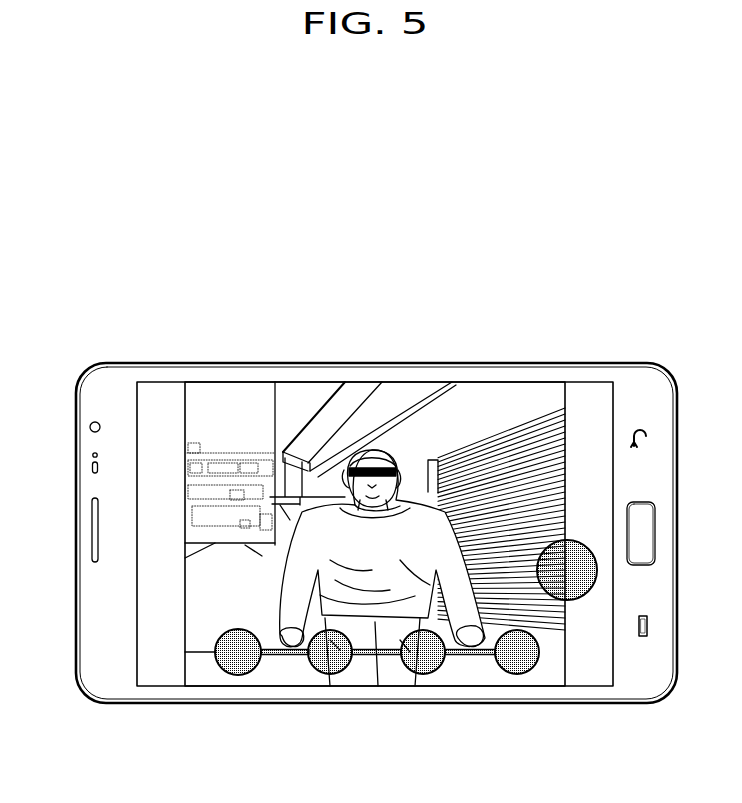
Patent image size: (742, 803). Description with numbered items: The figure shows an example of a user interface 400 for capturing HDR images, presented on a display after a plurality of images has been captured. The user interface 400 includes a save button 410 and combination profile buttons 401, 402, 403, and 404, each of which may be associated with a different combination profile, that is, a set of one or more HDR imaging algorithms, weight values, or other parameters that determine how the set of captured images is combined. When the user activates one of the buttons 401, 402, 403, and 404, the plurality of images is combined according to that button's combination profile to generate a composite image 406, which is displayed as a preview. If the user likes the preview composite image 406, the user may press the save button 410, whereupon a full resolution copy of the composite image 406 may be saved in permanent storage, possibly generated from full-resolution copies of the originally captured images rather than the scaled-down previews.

The user interface 400 is at (518, 279).
The composite image 406 is at (243, 382).
The combination profile button 401 is at (246, 673).
The combination profile button 402 is at (337, 672).
The combination profile button 403 is at (430, 672).
The combination profile button 404 is at (524, 672).
The save button 410 is at (597, 567).